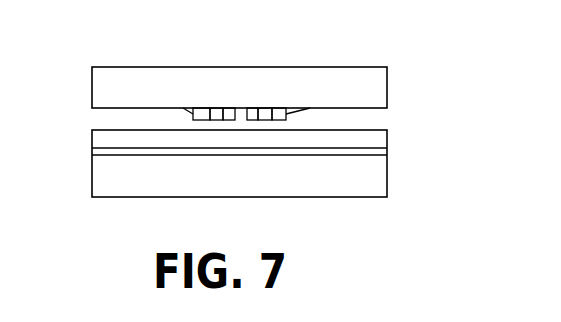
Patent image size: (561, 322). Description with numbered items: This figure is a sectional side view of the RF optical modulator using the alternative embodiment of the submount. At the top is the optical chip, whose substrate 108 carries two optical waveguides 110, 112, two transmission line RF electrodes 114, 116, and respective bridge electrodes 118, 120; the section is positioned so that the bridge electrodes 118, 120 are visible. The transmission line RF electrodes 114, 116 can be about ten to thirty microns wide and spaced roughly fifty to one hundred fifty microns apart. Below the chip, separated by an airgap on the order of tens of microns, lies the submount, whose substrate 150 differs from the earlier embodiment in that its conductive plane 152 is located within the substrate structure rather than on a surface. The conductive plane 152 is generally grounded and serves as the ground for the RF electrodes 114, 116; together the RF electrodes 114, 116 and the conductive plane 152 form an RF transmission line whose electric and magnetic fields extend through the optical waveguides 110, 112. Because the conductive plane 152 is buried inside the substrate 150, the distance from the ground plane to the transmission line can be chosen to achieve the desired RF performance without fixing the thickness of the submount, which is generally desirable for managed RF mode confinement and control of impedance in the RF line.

The substrate 108 is at (378, 92).
The optical waveguide 110 is at (196, 104).
The optical waveguide 112 is at (289, 104).
The transmission line RF electrode 114 is at (192, 108).
The transmission line RF electrode 116 is at (287, 115).
The bridge electrode 118 is at (216, 120).
The bridge electrode 120 is at (258, 120).
The substrate 150 is at (239, 176).
The conductive plane 152 is at (123, 155).